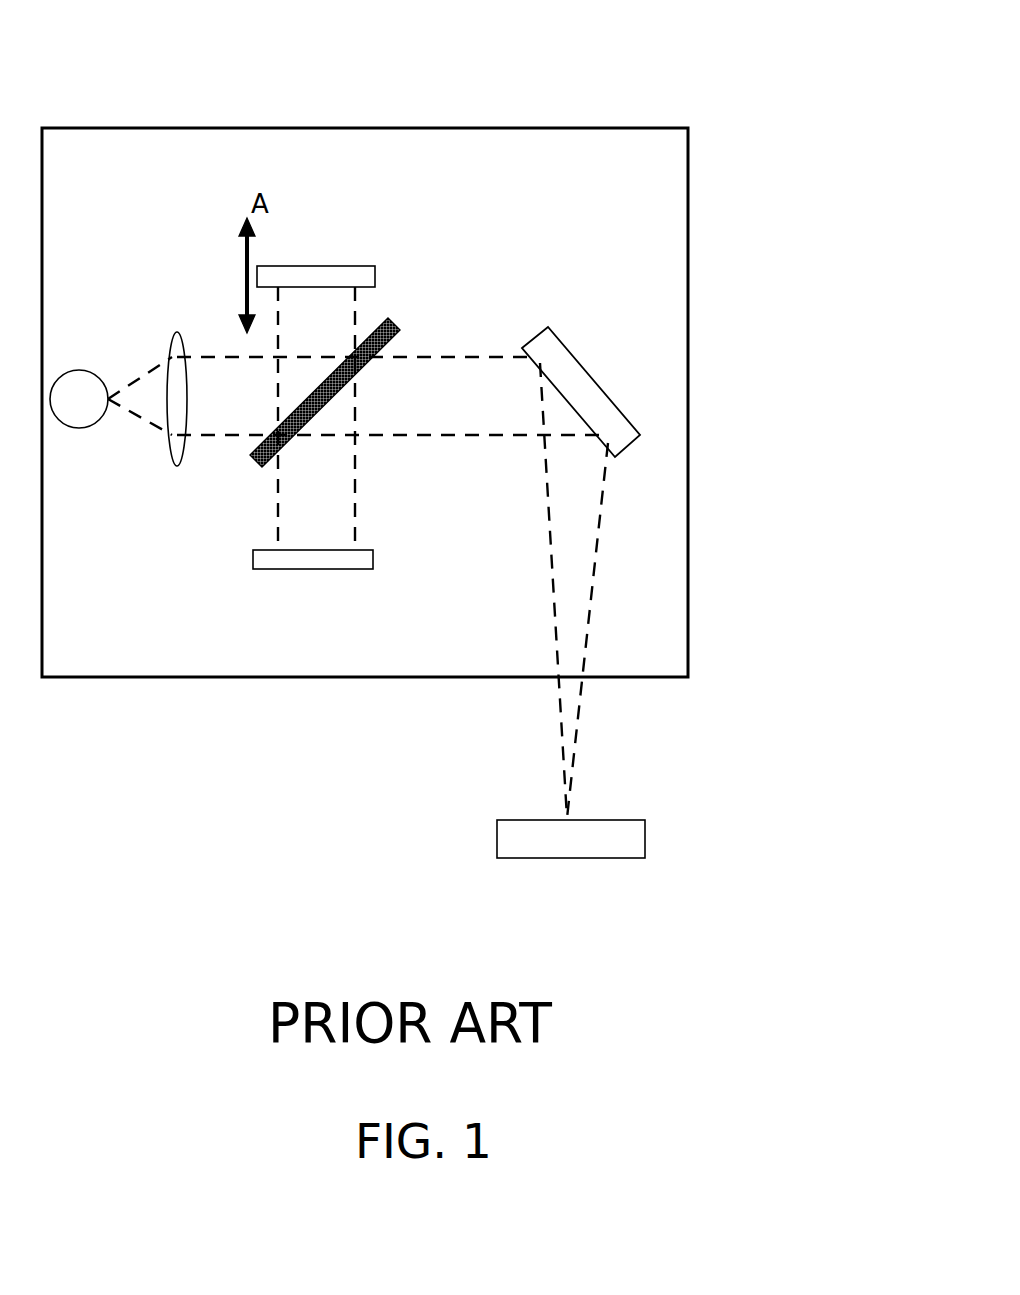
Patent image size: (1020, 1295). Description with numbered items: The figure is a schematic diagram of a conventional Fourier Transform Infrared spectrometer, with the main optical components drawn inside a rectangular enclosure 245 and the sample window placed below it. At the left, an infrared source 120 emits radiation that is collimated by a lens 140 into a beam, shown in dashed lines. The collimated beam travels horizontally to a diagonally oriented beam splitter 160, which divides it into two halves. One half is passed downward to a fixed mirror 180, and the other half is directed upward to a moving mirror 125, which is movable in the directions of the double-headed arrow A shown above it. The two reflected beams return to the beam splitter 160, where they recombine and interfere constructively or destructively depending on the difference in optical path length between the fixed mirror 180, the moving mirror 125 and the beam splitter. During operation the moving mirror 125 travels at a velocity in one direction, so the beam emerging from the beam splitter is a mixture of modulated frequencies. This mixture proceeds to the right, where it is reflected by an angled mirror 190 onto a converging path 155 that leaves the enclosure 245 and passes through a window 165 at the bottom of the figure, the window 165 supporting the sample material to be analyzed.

The optical head housing 245 is at (592, 128).
The infrared source 120 is at (78, 372).
The lens 140 is at (170, 360).
The moving mirror 125 is at (368, 272).
The beam splitter 160 is at (403, 332).
The mirror 190 is at (575, 362).
The path 155 is at (595, 555).
The fixed mirror 180 is at (373, 552).
The window 165 is at (630, 820).